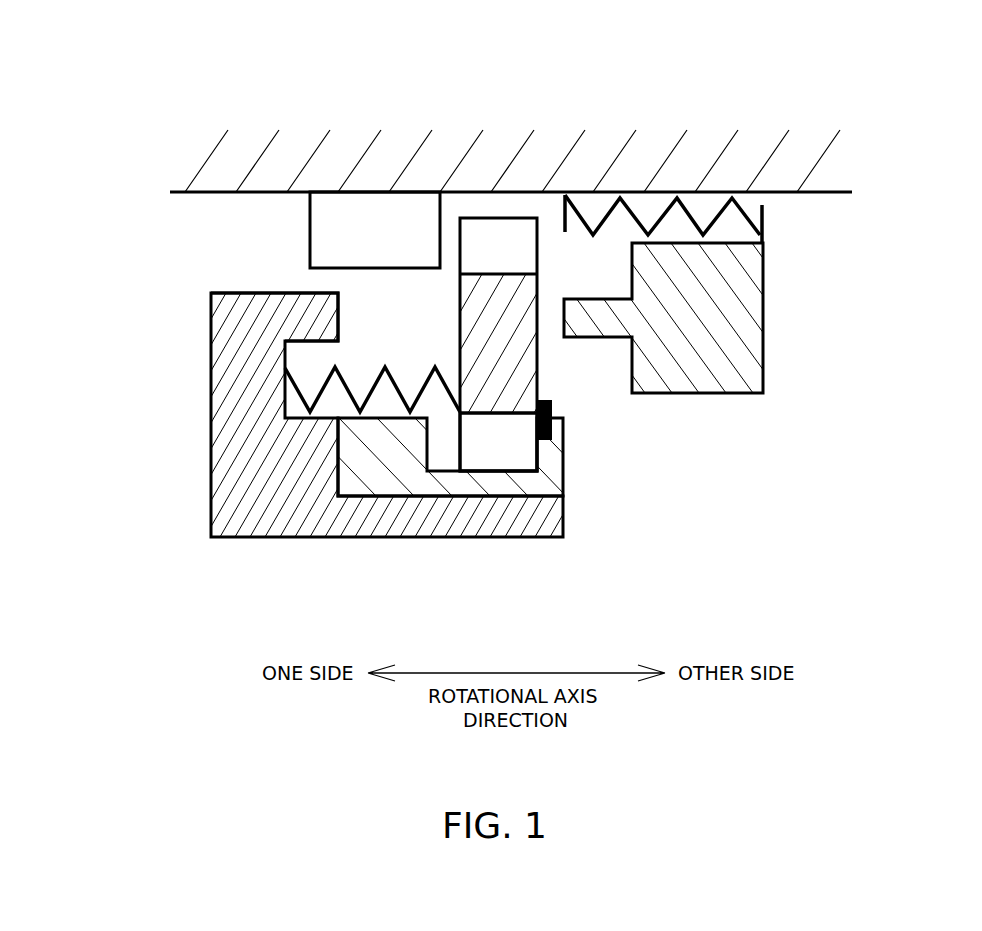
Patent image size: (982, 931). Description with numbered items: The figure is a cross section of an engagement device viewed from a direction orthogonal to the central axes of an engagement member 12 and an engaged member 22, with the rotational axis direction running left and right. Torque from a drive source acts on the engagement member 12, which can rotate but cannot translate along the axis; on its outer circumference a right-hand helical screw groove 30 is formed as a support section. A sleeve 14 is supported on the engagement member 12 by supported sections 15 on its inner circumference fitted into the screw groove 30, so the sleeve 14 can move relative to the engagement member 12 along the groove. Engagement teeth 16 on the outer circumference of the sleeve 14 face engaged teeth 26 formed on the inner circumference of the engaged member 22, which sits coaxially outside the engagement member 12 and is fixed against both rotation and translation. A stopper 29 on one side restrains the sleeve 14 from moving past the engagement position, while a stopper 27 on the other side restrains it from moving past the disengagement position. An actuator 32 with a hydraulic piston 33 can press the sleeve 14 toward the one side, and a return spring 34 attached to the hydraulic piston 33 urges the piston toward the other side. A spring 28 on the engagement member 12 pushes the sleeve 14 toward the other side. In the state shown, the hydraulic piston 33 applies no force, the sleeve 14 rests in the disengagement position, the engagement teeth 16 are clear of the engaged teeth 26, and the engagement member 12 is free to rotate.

The engagement member 12 is at (238, 448).
The sleeve 14 is at (522, 344).
The supported section 15 is at (518, 455).
The engagement tooth 16 is at (519, 308).
The engaged member 22 is at (295, 150).
The engaged tooth 26 is at (310, 227).
The stopper 27 is at (555, 410).
The spring 28 is at (325, 378).
The stopper 29 is at (318, 317).
The screw groove 30 is at (400, 480).
The actuator 32 is at (694, 231).
The hydraulic piston 33 is at (730, 333).
The return spring 34 is at (600, 195).